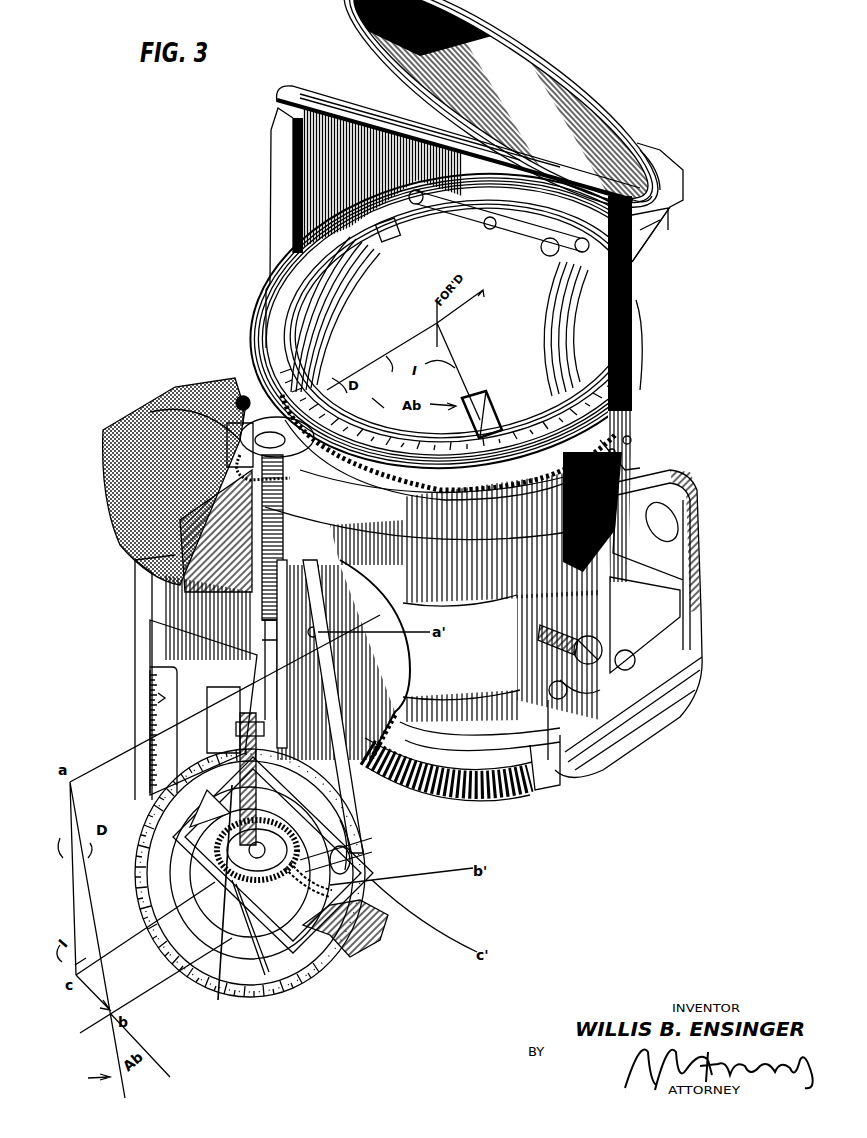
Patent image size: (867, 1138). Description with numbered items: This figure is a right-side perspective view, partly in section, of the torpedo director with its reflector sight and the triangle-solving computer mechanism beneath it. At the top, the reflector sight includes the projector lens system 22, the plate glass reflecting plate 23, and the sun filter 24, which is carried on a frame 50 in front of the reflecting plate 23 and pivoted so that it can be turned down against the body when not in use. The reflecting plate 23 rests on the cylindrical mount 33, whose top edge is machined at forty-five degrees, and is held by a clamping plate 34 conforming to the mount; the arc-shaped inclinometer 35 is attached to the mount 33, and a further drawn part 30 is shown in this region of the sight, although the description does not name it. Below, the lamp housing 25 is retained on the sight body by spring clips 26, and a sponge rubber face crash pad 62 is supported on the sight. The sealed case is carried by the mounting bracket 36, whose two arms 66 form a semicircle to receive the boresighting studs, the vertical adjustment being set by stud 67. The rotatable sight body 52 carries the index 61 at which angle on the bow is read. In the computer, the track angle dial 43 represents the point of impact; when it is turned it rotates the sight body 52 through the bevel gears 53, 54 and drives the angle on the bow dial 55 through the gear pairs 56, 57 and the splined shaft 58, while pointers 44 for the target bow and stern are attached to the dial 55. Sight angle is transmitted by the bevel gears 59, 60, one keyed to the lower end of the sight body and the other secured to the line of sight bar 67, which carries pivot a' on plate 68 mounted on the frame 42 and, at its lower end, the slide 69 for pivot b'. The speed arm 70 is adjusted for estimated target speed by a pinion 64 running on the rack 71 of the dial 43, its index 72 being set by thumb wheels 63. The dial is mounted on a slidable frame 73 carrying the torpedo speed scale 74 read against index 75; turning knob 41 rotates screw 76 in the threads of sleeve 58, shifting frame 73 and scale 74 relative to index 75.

The projector lens system 22 is at (526, 385).
The reflecting plate 23 is at (282, 103).
The sun filter 24 is at (515, 40).
The lamp housing 25 is at (622, 697).
The spring clips 26 is at (470, 795).
The compass card 30 is at (558, 357).
The cylindrical mount 33 is at (285, 192).
The clamping plate 34 is at (632, 265).
The inclinometer 35 is at (563, 178).
The mounting bracket 36 is at (693, 540).
The knob 41 is at (227, 470).
The frame of the computer mechanism 42 is at (230, 611).
The track angle dial 43 is at (288, 983).
The pointers 44 is at (290, 244).
The frame 50 is at (657, 192).
The sight body 52 is at (623, 470).
The bevel gear 53 is at (237, 781).
The bevel gear 54 is at (327, 977).
The angle on the bow dial 55 is at (575, 421).
The gear pair 56 is at (228, 460).
The gear pair 57 is at (260, 358).
The splined shaft 58 is at (240, 729).
The bevel gear 59 is at (390, 787).
The bevel gear 60 is at (462, 790).
The index 61 is at (448, 451).
The face crash pad 62 is at (150, 540).
The thumb wheels 63 is at (226, 960).
The pinion 64 is at (274, 867).
The arms 66 is at (588, 684).
The line of sight bar 67 is at (320, 667).
The plate 68 is at (360, 655).
The slide 69 is at (372, 857).
The speed arm 70 is at (372, 880).
The rack 71 is at (297, 880).
The index 72 is at (210, 952).
The slidable frame 73 is at (158, 640).
The scale 74 is at (160, 698).
The index 75 is at (148, 668).
The screw 76 is at (280, 510).